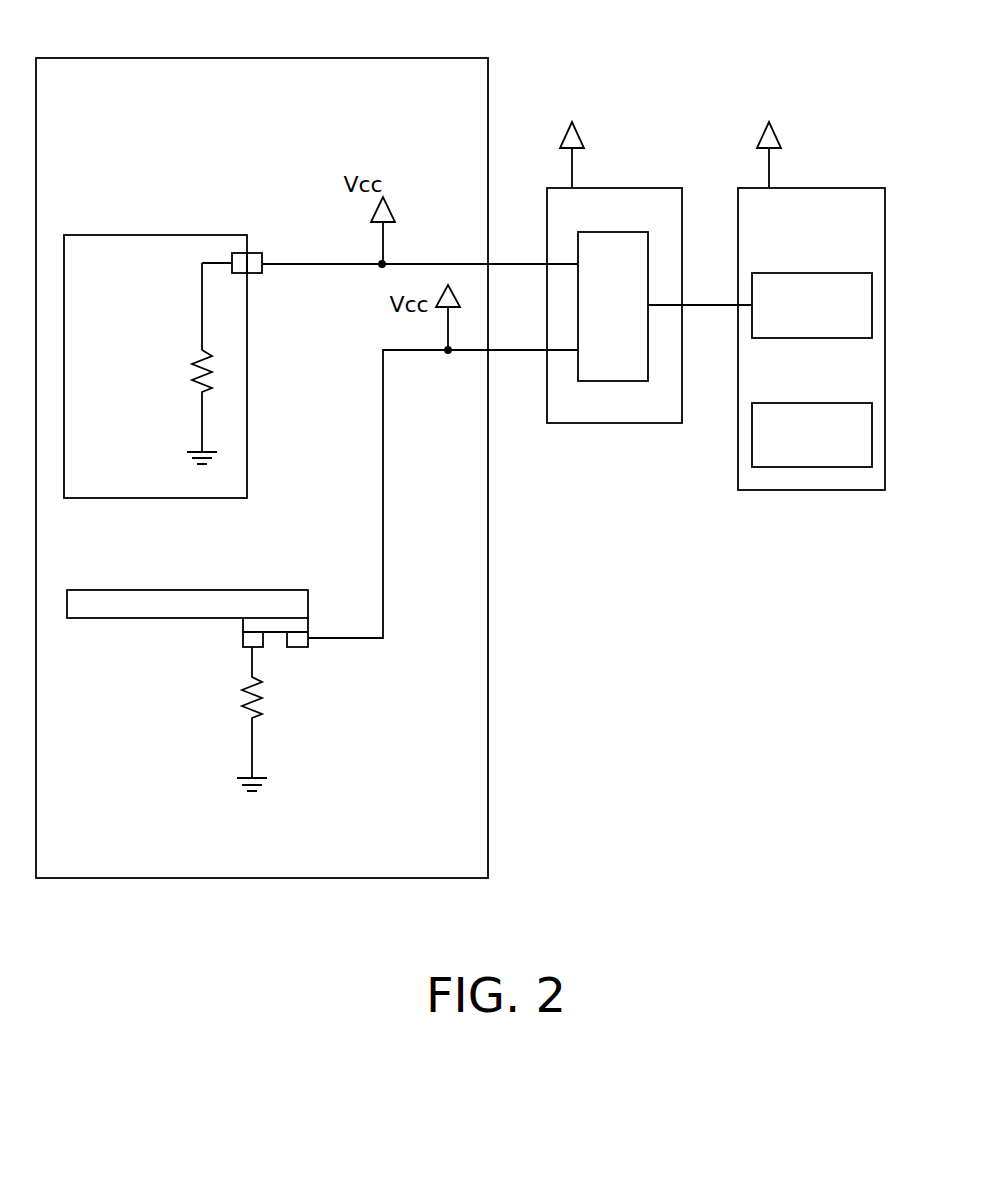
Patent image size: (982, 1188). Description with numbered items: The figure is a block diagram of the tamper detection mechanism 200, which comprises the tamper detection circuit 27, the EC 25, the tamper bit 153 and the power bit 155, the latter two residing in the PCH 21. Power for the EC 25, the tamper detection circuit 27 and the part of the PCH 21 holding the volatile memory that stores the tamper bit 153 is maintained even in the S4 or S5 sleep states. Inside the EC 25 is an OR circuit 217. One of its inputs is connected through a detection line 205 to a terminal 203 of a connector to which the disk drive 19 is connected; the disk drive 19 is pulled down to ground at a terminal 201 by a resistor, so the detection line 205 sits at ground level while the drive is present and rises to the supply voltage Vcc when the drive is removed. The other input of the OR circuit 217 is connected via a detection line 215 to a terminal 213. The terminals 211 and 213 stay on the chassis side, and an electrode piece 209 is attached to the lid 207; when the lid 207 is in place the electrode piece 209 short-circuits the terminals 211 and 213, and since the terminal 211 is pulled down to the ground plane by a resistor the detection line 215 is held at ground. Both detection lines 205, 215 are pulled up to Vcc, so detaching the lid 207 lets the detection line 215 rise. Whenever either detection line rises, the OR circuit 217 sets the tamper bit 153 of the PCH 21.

The tamper detection mechanism 200 is at (676, 48).
The tamper detection circuit 27 is at (432, 58).
The disk drive 19 is at (153, 235).
The terminal 201 is at (239, 253).
The terminal 203 is at (262, 253).
The detection line 205 is at (437, 264).
The detection line 215 is at (386, 537).
The lid 207 is at (236, 590).
The electrode piece 209 is at (296, 625).
The terminal 211 is at (243, 640).
The terminal 213 is at (297, 647).
The EC 25 is at (618, 188).
The OR circuit 217 is at (605, 232).
The PCH 21 is at (843, 188).
The tamper bit 153 is at (831, 273).
The power bit 155 is at (831, 403).